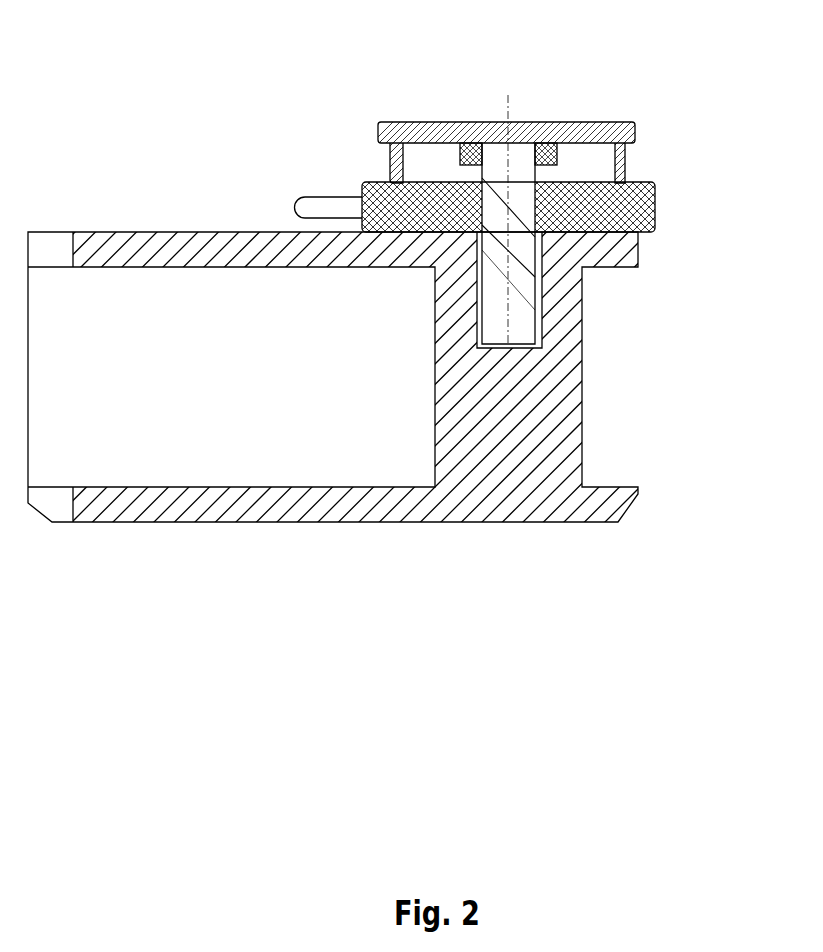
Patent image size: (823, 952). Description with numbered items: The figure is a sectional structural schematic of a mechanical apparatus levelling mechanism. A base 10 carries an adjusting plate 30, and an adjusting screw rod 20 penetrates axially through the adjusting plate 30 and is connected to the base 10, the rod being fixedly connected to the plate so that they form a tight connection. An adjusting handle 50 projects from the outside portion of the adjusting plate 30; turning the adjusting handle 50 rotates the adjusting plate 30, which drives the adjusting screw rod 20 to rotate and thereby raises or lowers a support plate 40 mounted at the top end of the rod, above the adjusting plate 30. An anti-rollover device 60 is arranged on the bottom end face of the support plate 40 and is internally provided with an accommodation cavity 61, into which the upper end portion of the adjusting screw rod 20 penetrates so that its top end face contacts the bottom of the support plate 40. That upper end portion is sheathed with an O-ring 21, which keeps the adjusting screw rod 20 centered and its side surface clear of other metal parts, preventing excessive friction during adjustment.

The base 10 is at (235, 216).
The adjusting screw rod 20 is at (508, 131).
The O-ring 21 is at (534, 134).
The adjusting plate 30 is at (663, 177).
The support plate 40 is at (570, 108).
The adjusting handle 50 is at (333, 181).
The anti-rollover device 60 is at (633, 141).
The accommodation cavity 61 is at (448, 130).